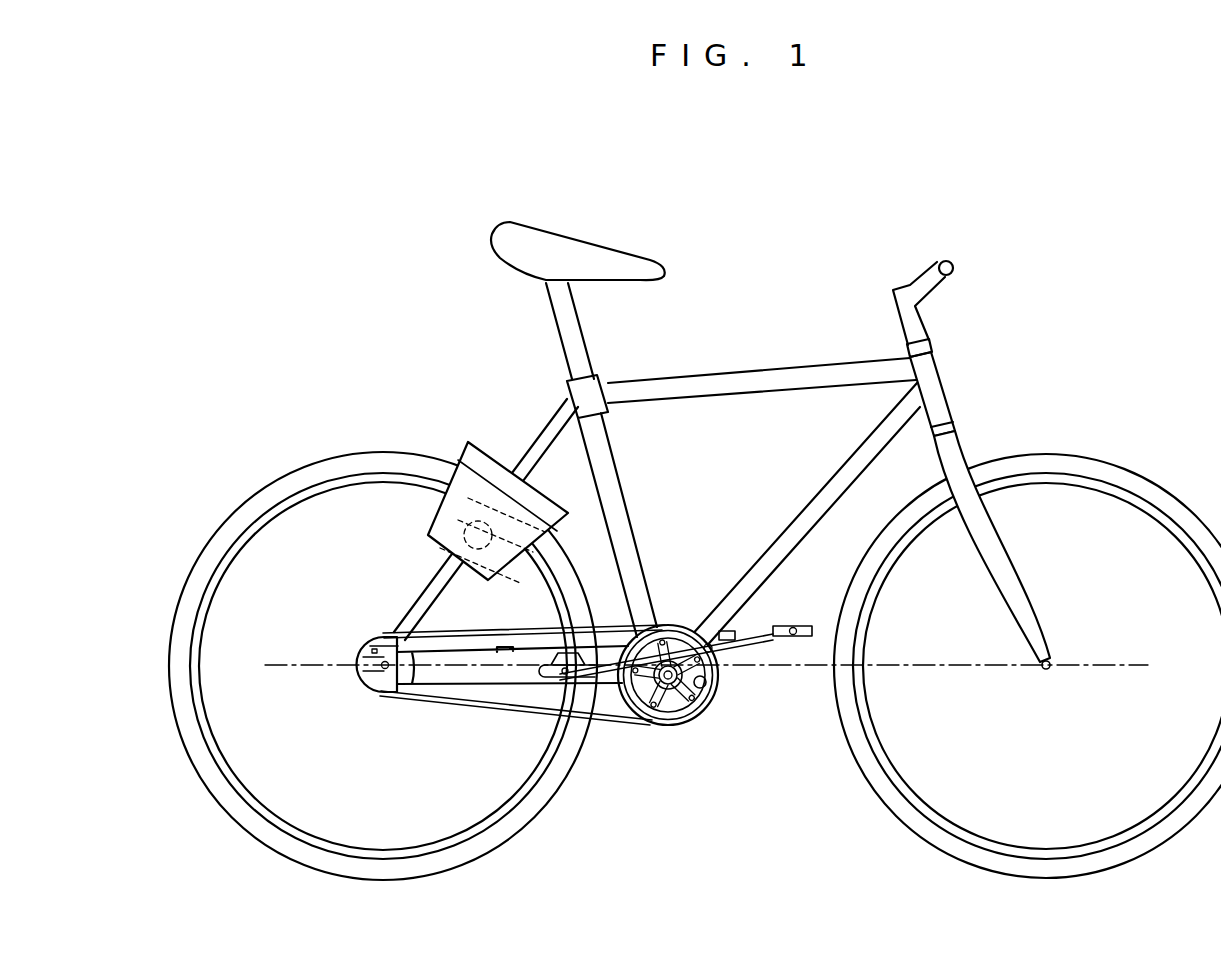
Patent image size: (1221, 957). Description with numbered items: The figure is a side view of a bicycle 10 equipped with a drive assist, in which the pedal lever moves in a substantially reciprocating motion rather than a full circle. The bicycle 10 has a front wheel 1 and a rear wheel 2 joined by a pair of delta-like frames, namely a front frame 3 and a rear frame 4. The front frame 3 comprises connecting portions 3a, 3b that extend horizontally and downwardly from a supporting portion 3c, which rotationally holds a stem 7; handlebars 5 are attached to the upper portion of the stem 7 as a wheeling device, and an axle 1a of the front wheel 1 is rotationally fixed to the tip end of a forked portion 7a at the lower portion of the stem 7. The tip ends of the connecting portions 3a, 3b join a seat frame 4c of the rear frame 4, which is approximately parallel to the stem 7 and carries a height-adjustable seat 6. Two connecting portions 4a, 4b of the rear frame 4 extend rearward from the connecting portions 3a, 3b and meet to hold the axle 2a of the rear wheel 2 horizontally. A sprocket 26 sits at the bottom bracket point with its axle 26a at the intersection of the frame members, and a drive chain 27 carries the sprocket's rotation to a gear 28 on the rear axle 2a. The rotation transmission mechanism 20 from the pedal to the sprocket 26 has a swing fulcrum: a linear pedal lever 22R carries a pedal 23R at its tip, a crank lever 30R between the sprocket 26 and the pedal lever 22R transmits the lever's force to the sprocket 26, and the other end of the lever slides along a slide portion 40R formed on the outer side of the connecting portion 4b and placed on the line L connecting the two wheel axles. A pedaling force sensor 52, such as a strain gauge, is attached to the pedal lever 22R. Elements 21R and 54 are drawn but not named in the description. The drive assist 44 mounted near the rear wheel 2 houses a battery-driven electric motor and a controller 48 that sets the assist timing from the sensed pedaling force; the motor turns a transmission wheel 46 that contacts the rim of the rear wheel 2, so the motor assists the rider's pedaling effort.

The front wheel 1 is at (1112, 454).
The axle 1a is at (1049, 670).
The rear wheel 2 is at (383, 658).
The axle 2a is at (366, 658).
The front frame 3 is at (827, 470).
The connecting portion 3a is at (733, 372).
The connecting portion 3b is at (808, 538).
The supporting portion 3c is at (950, 395).
The rear frame 4 is at (533, 521).
The connecting portion 4a is at (548, 442).
The connecting portion 4b is at (470, 650).
The seat frame 4c is at (632, 480).
The handlebars 5 is at (918, 277).
The seat 6 is at (597, 240).
The stem 7 is at (994, 471).
The forked portion 7a is at (992, 570).
The bicycle 10 is at (963, 244).
The rotation transmission mechanism 20 is at (617, 688).
The crank shaft 21R is at (612, 640).
The pedal lever 22R is at (785, 625).
The pedal 23R is at (810, 637).
The sprocket 26 is at (650, 704).
The axle 26a is at (668, 692).
The drive chain 27 is at (447, 705).
The gear 28 is at (366, 694).
The crank lever 30R is at (737, 685).
The slide portion 40R is at (532, 700).
The drive assist 44 is at (461, 475).
The transmission wheel 46 is at (440, 522).
The controller 48 is at (461, 475).
The pedaling force sensor 52 is at (716, 630).
The chain stay bracket 54 is at (561, 660).
The line L is at (946, 668).